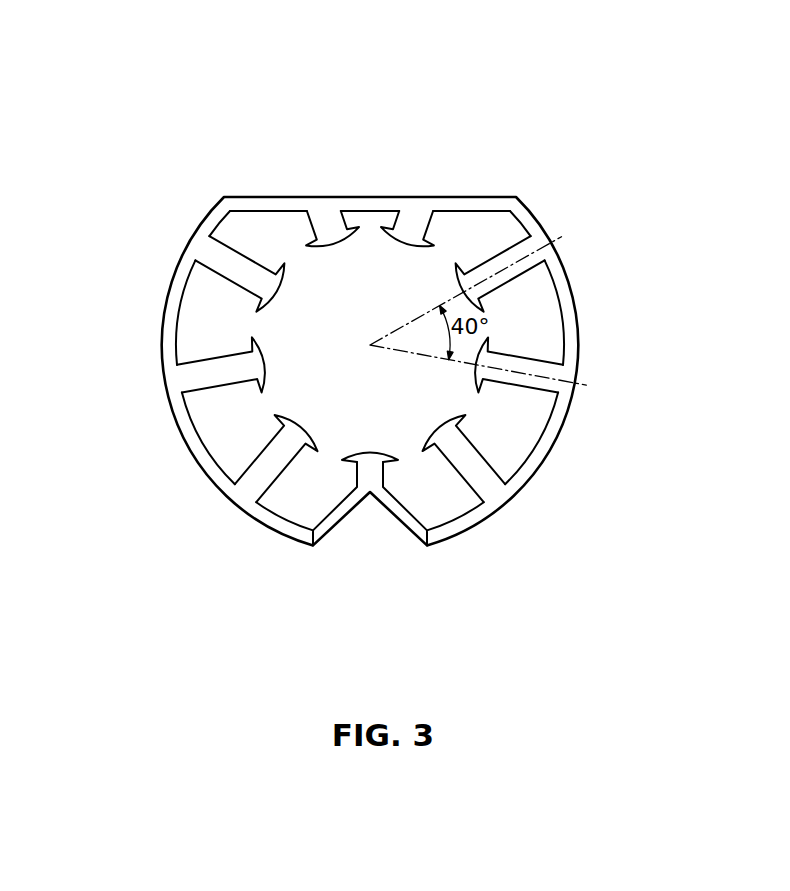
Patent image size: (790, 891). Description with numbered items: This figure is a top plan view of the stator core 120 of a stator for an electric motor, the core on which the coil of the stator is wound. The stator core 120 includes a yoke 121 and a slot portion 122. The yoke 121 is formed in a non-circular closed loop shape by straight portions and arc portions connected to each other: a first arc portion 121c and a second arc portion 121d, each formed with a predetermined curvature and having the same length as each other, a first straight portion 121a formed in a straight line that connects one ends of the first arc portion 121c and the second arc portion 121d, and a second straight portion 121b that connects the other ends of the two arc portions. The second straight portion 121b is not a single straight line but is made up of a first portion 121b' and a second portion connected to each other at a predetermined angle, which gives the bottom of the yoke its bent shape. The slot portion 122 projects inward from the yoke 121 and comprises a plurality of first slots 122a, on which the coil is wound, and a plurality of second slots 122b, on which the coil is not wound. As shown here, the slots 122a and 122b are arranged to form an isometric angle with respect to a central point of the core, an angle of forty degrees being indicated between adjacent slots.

The stator core 120 is at (203, 14).
The yoke 121 is at (366, 401).
The first straight portion 121a is at (460, 205).
The second straight portion 121b is at (369, 573).
The first portion 121b' is at (310, 541).
The first arc portion 121c is at (188, 433).
The second arc portion 121d is at (550, 443).
The slot portion 122 is at (426, 280).
The first slots 122a is at (277, 450).
The second slots 122b is at (412, 223).